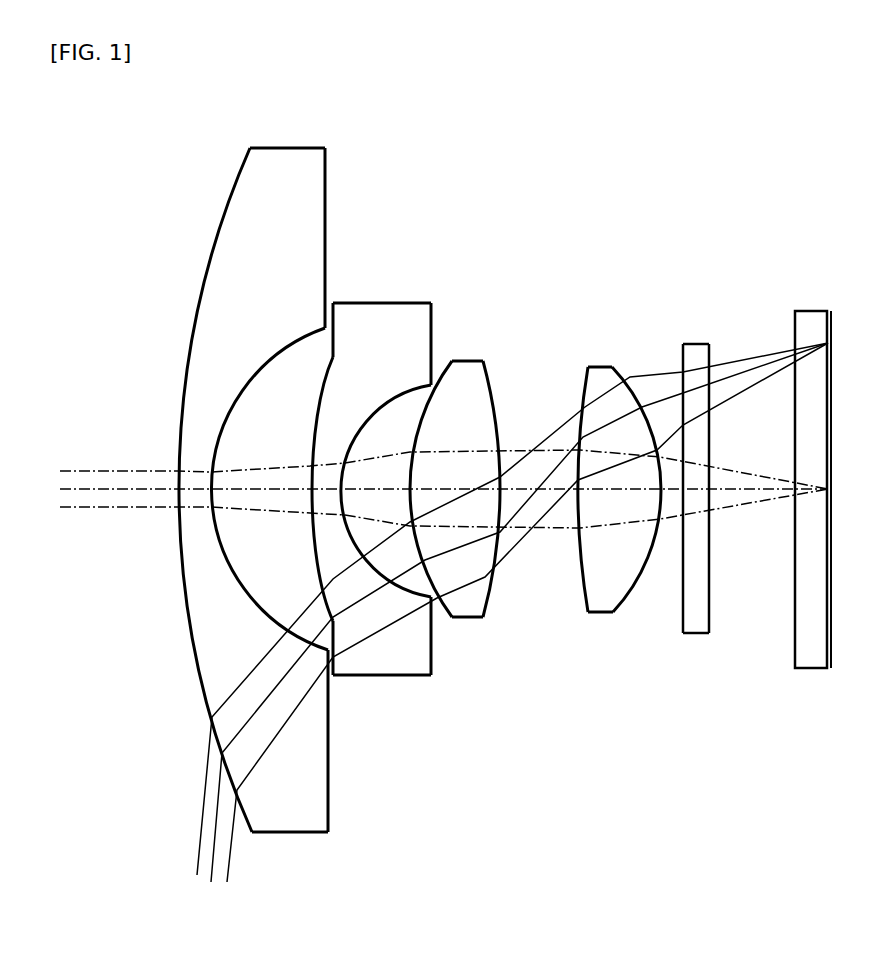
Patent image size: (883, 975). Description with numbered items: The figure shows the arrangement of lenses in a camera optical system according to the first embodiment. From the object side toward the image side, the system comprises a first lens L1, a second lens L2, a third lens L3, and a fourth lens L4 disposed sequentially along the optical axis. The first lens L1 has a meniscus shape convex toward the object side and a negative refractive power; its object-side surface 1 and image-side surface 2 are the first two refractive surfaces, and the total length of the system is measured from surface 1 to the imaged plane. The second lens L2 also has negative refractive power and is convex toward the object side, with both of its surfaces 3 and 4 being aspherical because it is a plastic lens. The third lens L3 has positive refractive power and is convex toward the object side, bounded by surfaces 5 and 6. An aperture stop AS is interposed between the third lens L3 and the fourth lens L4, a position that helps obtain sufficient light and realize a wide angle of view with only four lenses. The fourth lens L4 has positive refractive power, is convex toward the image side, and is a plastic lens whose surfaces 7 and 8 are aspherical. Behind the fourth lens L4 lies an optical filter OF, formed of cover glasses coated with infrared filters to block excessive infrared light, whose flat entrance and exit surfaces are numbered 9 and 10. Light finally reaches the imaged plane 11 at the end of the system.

The object-side surface of the first lens 1 is at (225, 214).
The image-side surface of the first lens 2 is at (327, 175).
The object-side surface of the second lens 3 is at (312, 412).
The image-side surface of the second lens 4 is at (398, 401).
The object-side surface of the third lens 5 is at (440, 608).
The image-side surface of the third lens 6 is at (493, 592).
The object-side surface of the fourth lens 7 is at (585, 400).
The image-side surface of the fourth lens 8 is at (628, 383).
The object-side surface of the optical filter 9 is at (683, 362).
The image-side surface of the optical filter 10 is at (709, 362).
The imaged plane 11 is at (813, 311).
The first lens L1 is at (224, 482).
The second lens L2 is at (320, 557).
The third lens L3 is at (488, 558).
The fourth lens L4 is at (618, 515).
The aperture stop AS is at (540, 541).
The optical filter OF is at (734, 500).